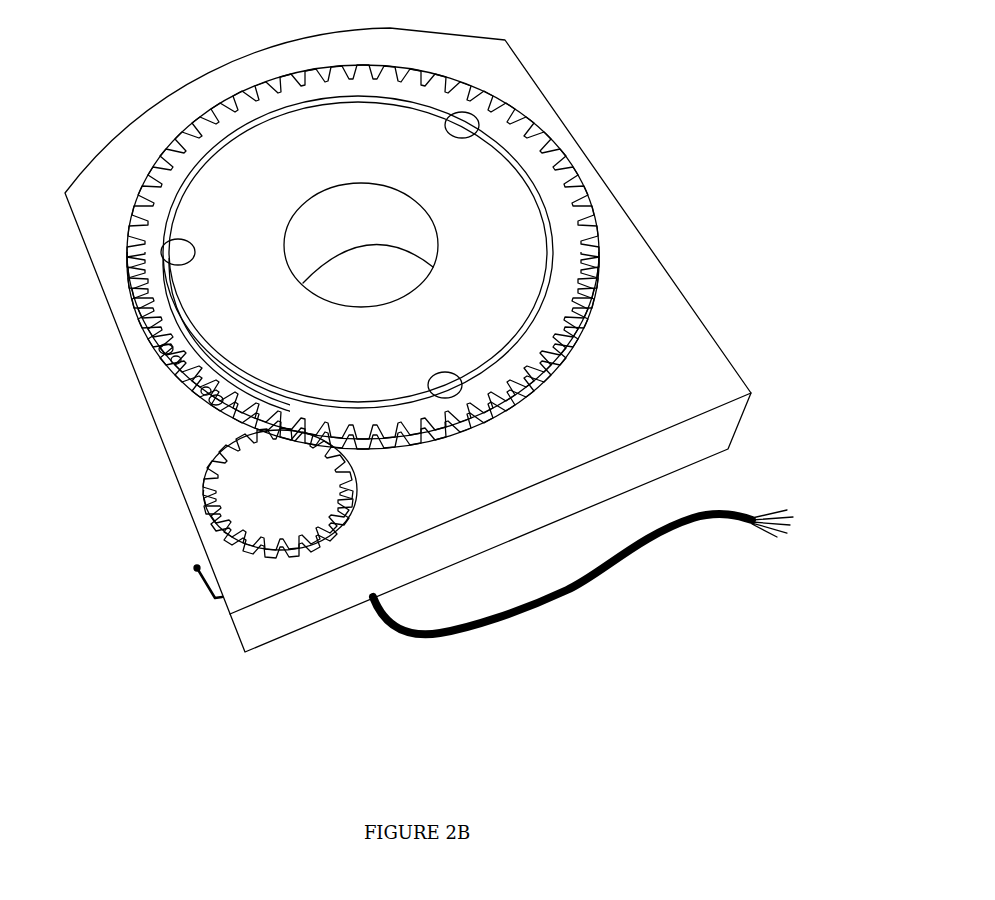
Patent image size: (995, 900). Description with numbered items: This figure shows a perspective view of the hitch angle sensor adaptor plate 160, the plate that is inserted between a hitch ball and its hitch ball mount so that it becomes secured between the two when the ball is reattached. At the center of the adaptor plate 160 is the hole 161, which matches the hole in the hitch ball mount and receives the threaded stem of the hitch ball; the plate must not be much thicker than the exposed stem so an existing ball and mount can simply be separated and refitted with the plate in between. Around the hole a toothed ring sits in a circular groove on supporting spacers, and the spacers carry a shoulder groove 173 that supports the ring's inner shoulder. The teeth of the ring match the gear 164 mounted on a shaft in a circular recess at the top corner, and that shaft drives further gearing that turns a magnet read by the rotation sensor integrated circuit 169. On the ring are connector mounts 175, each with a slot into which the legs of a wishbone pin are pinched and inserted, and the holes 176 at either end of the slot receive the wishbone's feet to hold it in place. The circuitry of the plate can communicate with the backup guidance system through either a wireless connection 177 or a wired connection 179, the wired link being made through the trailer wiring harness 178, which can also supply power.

The adaptor plate 160 is at (710, 462).
The hole 161 is at (361, 245).
The gear 164 is at (263, 485).
The rotation sensor integrated circuit 169 is at (462, 90).
The shoulder groove 173 is at (445, 385).
The connector mounts 175 is at (165, 352).
The holes 176 is at (214, 393).
The wireless connection 177 is at (204, 588).
The trailer wiring harness 178 is at (588, 566).
The wired connection 179 is at (777, 533).